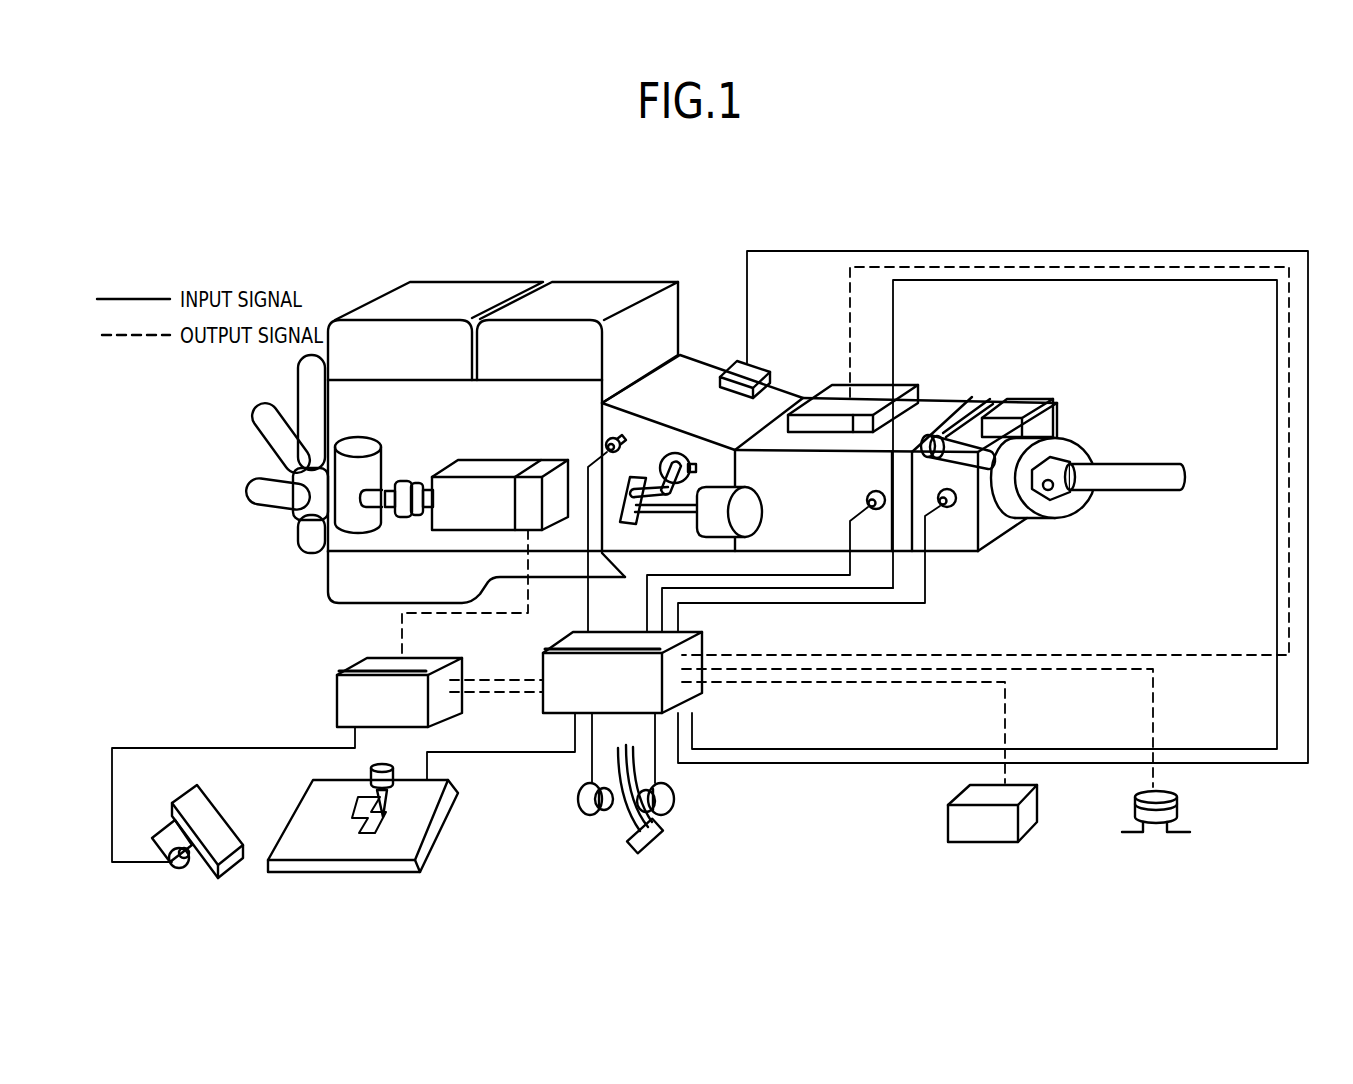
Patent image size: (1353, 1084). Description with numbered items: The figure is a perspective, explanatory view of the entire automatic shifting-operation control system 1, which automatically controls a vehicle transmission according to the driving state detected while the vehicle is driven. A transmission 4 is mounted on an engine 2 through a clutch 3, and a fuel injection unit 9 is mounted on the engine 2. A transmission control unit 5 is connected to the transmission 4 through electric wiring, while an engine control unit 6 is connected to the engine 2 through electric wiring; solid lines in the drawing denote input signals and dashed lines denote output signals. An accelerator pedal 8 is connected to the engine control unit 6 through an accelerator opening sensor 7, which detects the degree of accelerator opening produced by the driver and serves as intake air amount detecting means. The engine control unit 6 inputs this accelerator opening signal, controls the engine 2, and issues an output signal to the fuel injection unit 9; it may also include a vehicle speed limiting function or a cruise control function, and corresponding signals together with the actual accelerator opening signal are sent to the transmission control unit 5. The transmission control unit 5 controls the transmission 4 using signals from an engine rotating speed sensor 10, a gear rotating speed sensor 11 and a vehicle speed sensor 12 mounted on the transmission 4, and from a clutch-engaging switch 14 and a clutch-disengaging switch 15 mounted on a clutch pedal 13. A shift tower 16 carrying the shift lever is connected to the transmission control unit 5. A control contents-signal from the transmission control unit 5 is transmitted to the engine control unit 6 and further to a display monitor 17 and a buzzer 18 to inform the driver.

The automatic shifting-operation control system 1 is at (1013, 250).
The engine 2 is at (418, 294).
The clutch 3 is at (697, 383).
The transmission 4 is at (816, 482).
The transmission control unit 5 is at (690, 688).
The engine control unit 6 is at (333, 685).
The accelerator opening sensor 7 is at (188, 862).
The accelerator pedal 8 is at (188, 798).
The fuel injection unit 9 is at (548, 460).
The engine rotating speed sensor 10 is at (603, 444).
The gear rotating speed sensor 11 is at (955, 507).
The vehicle speed sensor 12 is at (944, 432).
The clutch pedal 13 is at (655, 846).
The clutch-engaging switch 14 is at (668, 802).
The clutch-disengaging switch 15 is at (587, 812).
The shift tower 16 is at (433, 830).
The display monitor 17 is at (1030, 813).
The buzzer 18 is at (1177, 805).